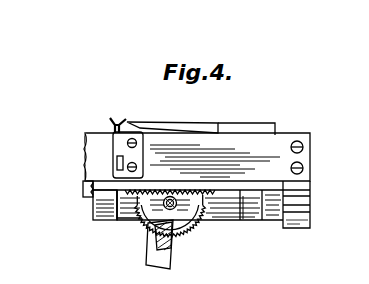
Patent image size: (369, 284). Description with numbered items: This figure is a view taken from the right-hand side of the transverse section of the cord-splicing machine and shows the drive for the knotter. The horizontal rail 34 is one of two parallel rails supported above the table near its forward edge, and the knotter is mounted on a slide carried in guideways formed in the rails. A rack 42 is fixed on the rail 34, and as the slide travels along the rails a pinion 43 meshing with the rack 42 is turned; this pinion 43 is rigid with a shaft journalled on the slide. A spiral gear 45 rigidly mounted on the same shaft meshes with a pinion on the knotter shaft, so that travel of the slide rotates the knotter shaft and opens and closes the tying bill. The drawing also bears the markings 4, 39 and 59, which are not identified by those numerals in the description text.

The rail 4 is at (243, 188).
The frame block 34 is at (85, 152).
The forked bracket 39 is at (110, 121).
The rack 42 is at (128, 199).
The pivot pin 43 is at (175, 210).
The toothed sector 45 is at (196, 224).
The pawl 59 is at (158, 266).